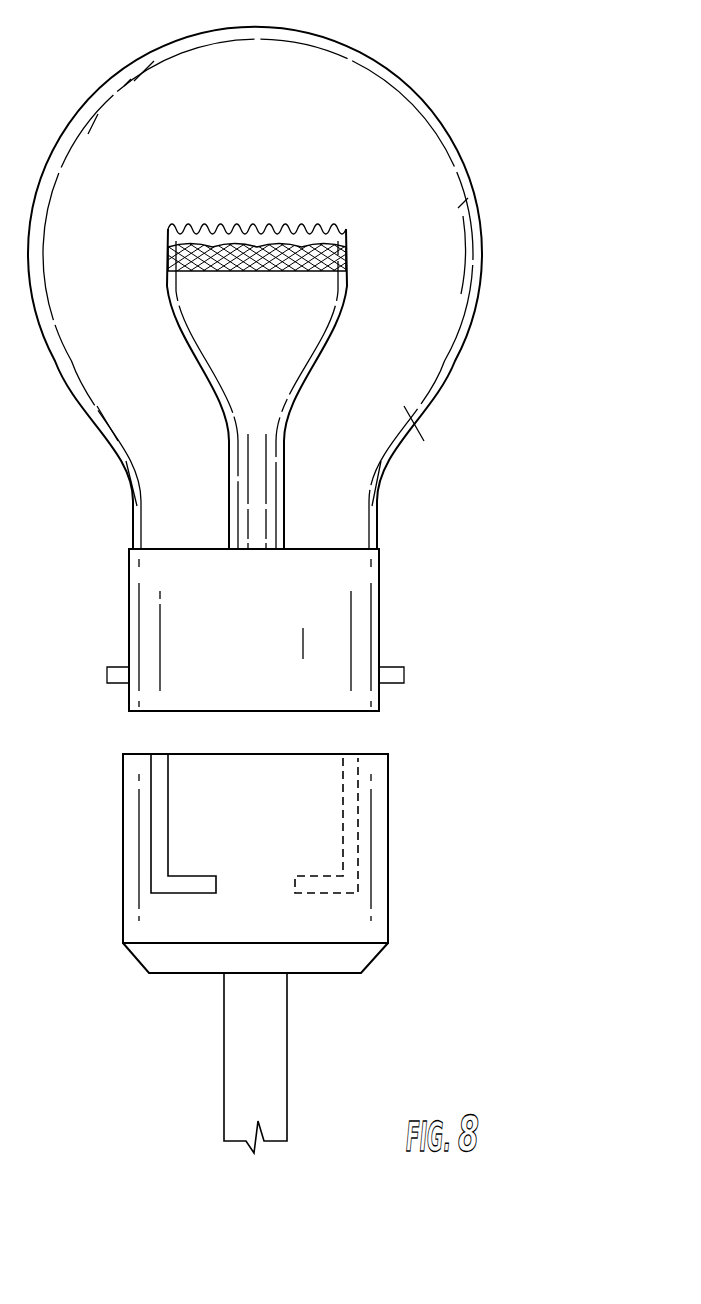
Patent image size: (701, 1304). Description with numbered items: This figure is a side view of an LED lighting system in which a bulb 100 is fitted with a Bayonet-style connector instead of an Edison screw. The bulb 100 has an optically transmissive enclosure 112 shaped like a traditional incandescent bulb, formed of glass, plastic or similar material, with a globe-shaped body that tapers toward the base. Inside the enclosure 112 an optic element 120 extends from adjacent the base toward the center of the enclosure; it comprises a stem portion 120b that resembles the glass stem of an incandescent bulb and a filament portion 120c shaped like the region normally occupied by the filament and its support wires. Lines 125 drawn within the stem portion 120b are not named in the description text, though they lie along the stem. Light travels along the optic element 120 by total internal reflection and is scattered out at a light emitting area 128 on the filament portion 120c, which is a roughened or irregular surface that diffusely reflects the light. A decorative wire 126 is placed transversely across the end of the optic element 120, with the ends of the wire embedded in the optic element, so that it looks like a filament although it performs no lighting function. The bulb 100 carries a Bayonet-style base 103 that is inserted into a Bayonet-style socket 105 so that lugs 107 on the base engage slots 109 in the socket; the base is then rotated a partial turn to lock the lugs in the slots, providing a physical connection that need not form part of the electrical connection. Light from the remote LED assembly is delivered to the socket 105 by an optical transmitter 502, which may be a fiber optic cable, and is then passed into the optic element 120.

The bulb 100 is at (472, 152).
The enclosure 112 is at (483, 233).
The optic element 120 is at (372, 253).
The stem portion 120b is at (277, 450).
The filament portion 120c is at (333, 310).
The electrical conductors / wires 125 is at (233, 532).
The wire 126 is at (222, 223).
The light emitting area 128 is at (267, 247).
The Bayonet-style base 103 is at (358, 595).
The lugs 107 is at (110, 675).
The Bayonet-style socket 105 is at (387, 812).
The slots 109 is at (152, 800).
The optical transmitter 502 is at (286, 1033).